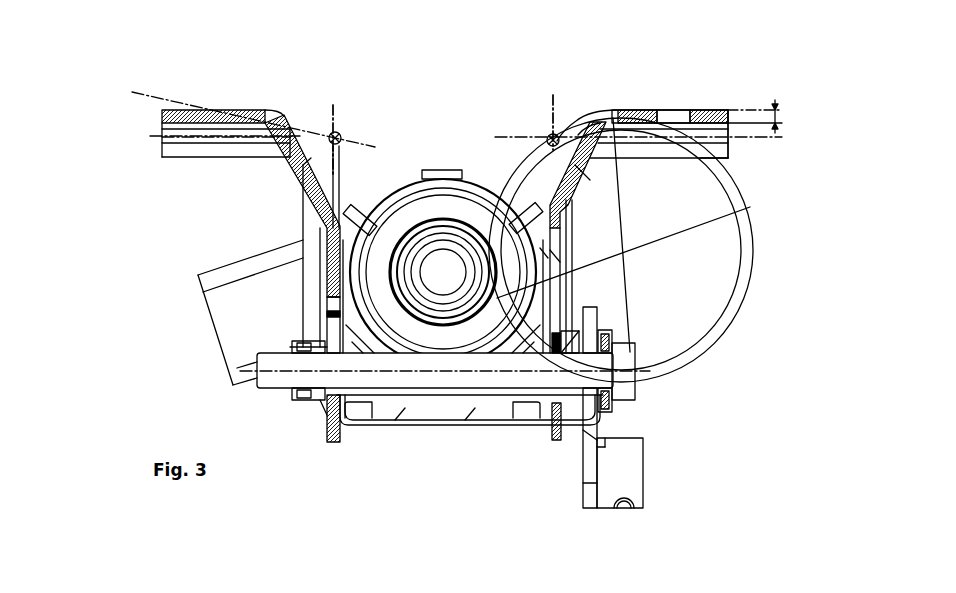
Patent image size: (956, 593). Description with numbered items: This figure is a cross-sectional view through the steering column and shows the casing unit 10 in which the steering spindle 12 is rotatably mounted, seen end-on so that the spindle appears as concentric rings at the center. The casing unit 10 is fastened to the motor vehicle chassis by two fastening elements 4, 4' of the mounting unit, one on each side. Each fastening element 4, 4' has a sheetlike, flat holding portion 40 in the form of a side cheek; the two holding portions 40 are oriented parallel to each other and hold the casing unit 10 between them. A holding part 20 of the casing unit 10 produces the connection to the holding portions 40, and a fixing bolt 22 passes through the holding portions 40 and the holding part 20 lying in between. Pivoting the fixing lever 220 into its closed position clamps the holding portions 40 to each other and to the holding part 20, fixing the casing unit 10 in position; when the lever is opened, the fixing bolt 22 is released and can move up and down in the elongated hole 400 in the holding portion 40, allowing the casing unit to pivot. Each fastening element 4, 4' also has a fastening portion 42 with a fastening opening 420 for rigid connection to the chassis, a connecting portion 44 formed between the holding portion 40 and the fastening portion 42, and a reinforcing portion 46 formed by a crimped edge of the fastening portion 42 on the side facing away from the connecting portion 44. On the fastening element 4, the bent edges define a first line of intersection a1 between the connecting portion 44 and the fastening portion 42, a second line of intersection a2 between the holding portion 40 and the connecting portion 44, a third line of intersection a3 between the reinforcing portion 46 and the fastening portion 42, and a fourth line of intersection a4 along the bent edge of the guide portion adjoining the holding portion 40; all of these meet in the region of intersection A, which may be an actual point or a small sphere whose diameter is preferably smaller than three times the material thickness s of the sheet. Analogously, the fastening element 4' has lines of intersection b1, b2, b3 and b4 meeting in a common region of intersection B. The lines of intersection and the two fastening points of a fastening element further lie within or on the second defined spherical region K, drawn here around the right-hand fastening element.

The casing unit 10 is at (486, 192).
The steering spindle 12 is at (420, 316).
The holding part 20 is at (435, 420).
The fixing bolt 22 is at (517, 363).
The fixing lever 220 is at (625, 478).
The fastening element 4 is at (639, 141).
The fastening element 4' is at (203, 203).
The holding portion 40 is at (553, 256).
The fastening portion 42 is at (638, 110).
The connecting portion 44 is at (583, 172).
The reinforcing portion 46 is at (722, 150).
The elongated hole 400 is at (540, 253).
The fastening opening 420 is at (731, 140).
The region of intersection A is at (550, 130).
The region of intersection B is at (346, 136).
The spherical region K is at (712, 351).
The first line of intersection a1 is at (708, 106).
The second line of intersection a2 is at (556, 100).
The fourth line of intersection a4 is at (556, 100).
The third line of intersection a3 is at (503, 143).
The first line of intersection b1 is at (160, 100).
The second line of intersection b2 is at (333, 113).
The fourth line of intersection b4 is at (333, 113).
The third line of intersection b3 is at (177, 132).
The material thickness s is at (777, 108).